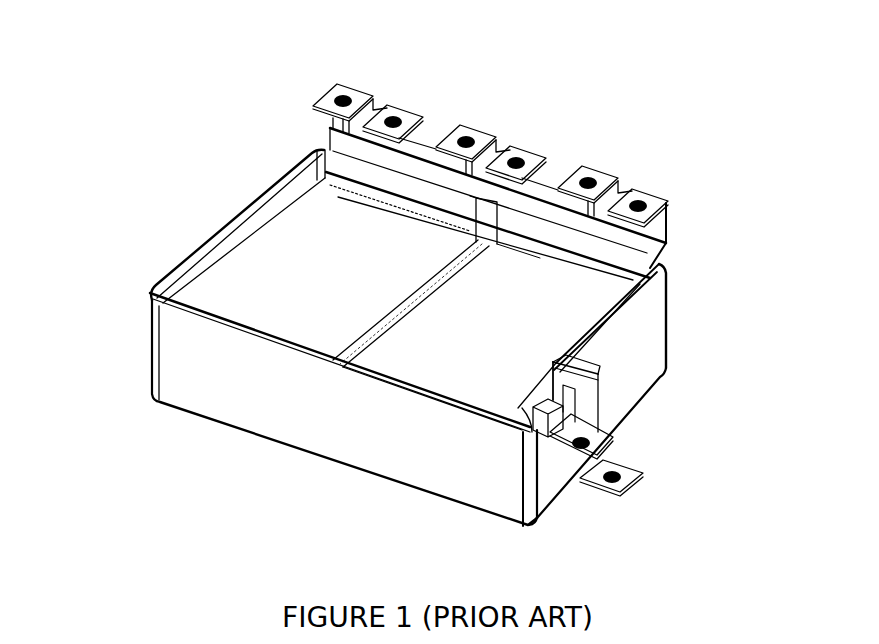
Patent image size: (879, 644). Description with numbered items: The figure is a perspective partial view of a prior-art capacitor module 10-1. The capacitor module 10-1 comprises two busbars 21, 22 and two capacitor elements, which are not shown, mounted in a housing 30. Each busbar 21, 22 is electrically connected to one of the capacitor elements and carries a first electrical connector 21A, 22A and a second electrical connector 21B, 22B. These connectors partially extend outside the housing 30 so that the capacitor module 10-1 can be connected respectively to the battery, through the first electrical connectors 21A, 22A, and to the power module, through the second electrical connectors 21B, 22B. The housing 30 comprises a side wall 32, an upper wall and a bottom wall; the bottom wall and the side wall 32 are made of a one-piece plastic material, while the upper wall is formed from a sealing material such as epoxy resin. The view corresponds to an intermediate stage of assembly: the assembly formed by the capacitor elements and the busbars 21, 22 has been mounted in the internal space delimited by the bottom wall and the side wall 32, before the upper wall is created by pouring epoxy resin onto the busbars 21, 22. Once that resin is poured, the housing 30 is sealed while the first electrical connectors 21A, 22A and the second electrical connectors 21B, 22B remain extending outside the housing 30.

The capacitor module 10-1 is at (203, 133).
The busbar 21 is at (253, 252).
The busbar 22 is at (556, 311).
The first electrical connector 21A is at (635, 486).
The second electrical connector 21B is at (353, 82).
The first electrical connector 22A is at (558, 457).
The second electrical connector 22B is at (398, 115).
The housing 30 is at (190, 409).
The side wall 32 is at (293, 432).